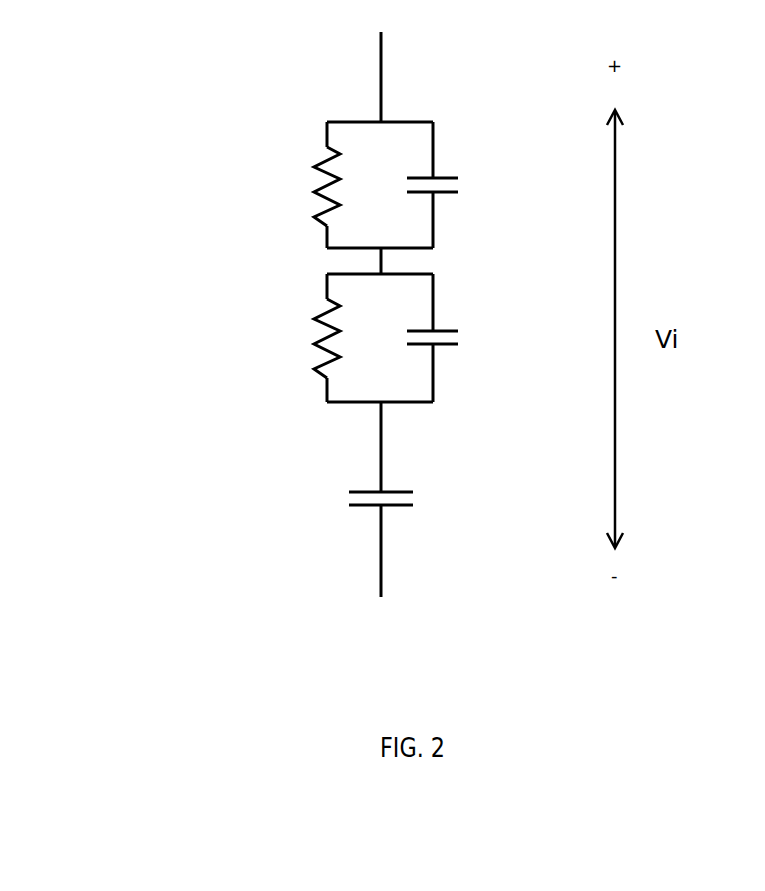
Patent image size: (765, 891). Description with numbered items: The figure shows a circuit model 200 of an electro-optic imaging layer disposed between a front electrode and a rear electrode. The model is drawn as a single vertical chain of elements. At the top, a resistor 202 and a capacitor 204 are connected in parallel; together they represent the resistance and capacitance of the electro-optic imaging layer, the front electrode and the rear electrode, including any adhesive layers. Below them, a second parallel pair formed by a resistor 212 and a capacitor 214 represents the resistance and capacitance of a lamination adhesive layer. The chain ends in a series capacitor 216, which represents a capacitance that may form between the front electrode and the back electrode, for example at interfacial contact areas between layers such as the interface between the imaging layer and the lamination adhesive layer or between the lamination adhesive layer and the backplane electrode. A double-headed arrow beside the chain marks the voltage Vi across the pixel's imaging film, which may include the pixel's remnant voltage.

The equivalent circuit model 200 is at (108, 40).
The resistor 202 is at (298, 177).
The capacitor 204 is at (465, 180).
The resistor 212 is at (306, 330).
The capacitor 214 is at (468, 339).
The capacitor 216 is at (433, 496).